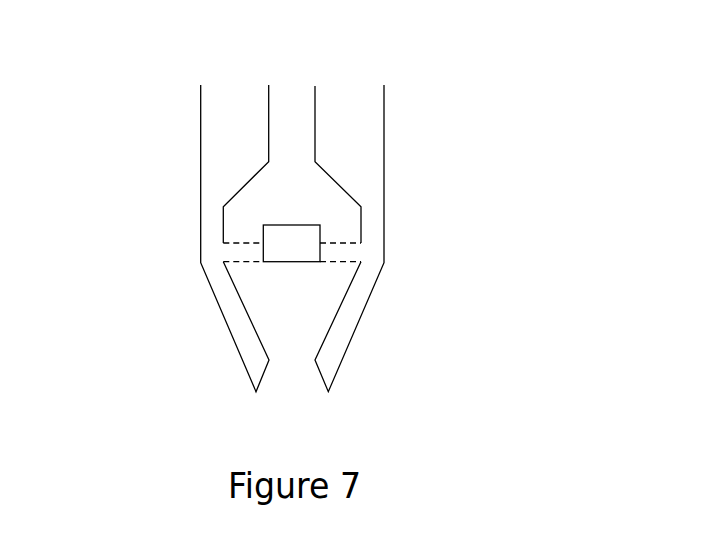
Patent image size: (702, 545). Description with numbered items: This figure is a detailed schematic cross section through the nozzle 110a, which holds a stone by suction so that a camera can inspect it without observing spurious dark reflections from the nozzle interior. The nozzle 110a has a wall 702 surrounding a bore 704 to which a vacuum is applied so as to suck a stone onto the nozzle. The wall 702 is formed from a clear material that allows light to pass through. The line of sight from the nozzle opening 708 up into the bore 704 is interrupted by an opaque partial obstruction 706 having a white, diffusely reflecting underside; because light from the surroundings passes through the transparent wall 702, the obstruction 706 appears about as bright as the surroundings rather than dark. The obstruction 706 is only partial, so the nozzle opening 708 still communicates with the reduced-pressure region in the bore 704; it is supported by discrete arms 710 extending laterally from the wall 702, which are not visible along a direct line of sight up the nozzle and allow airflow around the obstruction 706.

The nozzle 110a is at (201, 176).
The wall 702 is at (384, 137).
The bore 704 is at (292, 115).
The partial obstruction 706 is at (320, 235).
The nozzle opening 708 is at (297, 392).
The arms 710 is at (245, 263).